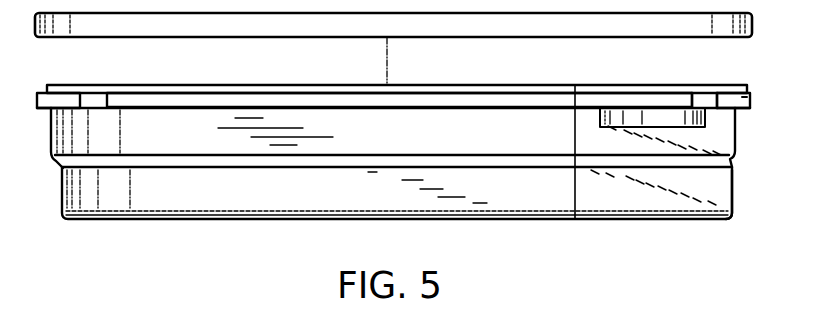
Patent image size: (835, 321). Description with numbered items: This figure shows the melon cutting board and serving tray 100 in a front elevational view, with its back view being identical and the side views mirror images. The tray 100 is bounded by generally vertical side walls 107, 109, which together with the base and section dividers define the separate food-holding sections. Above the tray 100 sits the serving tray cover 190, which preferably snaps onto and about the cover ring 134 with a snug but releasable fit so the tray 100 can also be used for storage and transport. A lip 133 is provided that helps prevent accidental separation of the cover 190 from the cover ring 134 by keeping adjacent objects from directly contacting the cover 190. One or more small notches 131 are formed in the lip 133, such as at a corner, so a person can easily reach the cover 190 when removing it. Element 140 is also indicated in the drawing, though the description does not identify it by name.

The melon cutting board and serving tray 100 is at (393, 191).
The side wall 107 is at (733, 207).
The side wall 109 is at (423, 202).
The notch 131 is at (705, 100).
The lip 133 is at (746, 108).
The cover ring 134 is at (394, 180).
The channel element 140 is at (713, 117).
The serving tray cover 190 is at (246, 52).